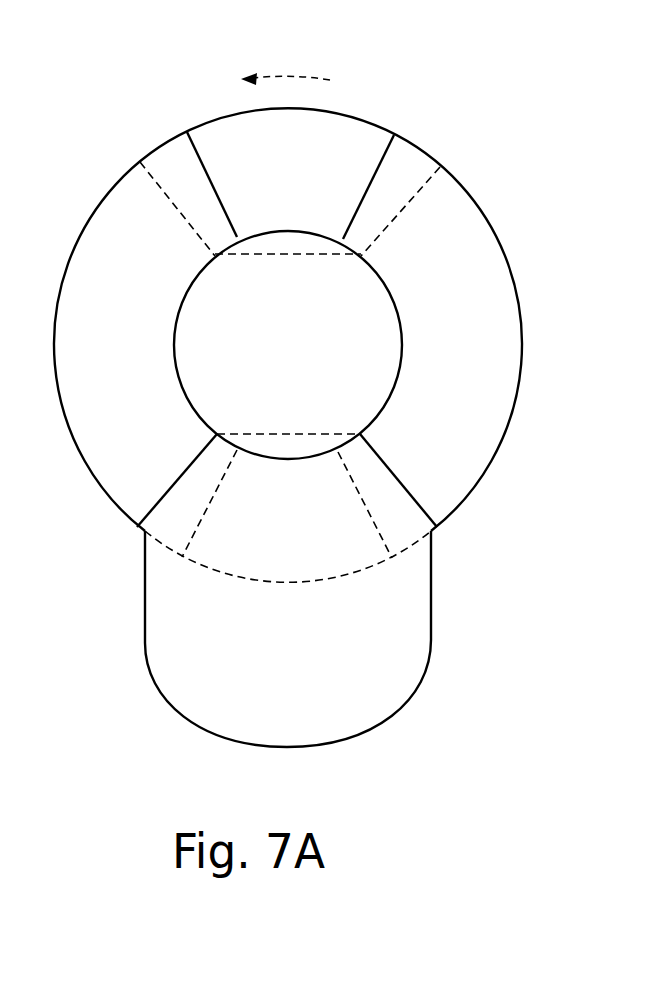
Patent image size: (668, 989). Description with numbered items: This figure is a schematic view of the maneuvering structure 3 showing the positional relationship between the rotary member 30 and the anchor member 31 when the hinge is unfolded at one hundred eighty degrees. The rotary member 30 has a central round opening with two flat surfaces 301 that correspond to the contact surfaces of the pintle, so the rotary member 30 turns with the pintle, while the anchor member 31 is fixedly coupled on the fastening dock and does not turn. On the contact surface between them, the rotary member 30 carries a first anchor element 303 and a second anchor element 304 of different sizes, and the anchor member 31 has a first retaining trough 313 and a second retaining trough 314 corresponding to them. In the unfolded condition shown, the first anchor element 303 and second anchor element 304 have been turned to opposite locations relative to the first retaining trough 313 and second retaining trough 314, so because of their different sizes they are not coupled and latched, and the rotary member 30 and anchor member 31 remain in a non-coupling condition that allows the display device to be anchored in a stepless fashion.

The maneuvering structure 3 is at (496, 98).
The rotary member 30 is at (313, 583).
The flat surfaces 301 is at (290, 255).
The first anchor element 303 is at (372, 515).
The second anchor element 304 is at (178, 210).
The anchor member 31 is at (428, 620).
The first retaining trough 313 is at (238, 138).
The second retaining trough 314 is at (370, 472).